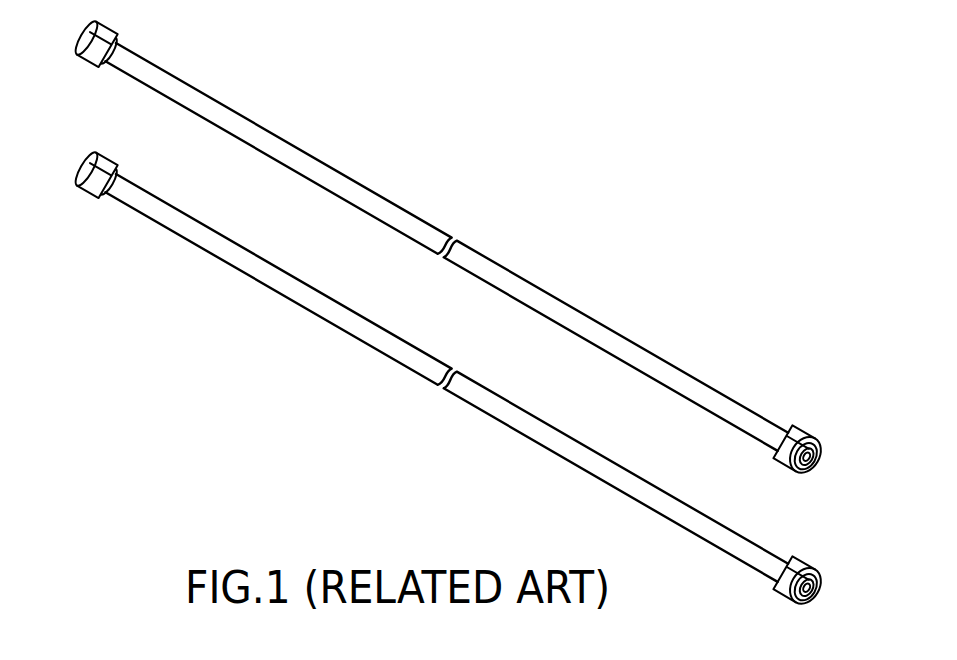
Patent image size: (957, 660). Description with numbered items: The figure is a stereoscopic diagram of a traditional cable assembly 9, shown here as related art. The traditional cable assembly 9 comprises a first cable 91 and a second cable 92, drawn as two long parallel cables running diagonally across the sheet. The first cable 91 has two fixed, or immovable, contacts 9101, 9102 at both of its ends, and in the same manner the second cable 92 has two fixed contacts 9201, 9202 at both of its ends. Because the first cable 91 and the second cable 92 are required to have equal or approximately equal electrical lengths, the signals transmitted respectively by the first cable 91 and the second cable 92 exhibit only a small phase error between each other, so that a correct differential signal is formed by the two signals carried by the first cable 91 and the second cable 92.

The traditional cable assembly 9 is at (457, 306).
The first cable 91 is at (460, 240).
The second cable 92 is at (449, 380).
The fixed contact 9101 is at (94, 35).
The fixed contact 9102 is at (790, 432).
The fixed contact 9201 is at (92, 186).
The fixed contact 9202 is at (788, 567).